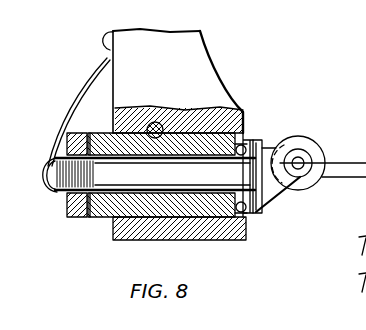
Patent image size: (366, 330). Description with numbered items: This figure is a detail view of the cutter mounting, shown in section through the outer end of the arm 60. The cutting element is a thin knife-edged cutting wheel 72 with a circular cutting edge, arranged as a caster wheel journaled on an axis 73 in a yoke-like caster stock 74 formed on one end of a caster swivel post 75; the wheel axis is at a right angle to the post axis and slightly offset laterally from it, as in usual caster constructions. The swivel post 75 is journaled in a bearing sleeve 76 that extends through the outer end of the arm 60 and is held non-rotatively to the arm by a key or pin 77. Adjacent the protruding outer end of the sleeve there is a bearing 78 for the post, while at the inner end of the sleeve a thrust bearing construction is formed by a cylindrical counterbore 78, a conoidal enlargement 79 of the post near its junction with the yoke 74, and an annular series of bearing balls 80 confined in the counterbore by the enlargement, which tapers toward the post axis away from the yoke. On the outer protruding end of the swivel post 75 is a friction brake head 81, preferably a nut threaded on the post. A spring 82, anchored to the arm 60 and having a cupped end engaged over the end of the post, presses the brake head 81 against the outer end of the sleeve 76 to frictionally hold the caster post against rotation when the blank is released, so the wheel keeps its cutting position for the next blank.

The arm 60 is at (193, 80).
The cutting wheel 72 is at (301, 138).
The axis 73 is at (300, 180).
The caster stock 74 is at (272, 185).
The caster swivel post 75 is at (99, 218).
The bearing sleeve 76 is at (103, 143).
The key or pin 77 is at (157, 125).
The bearing 78 is at (245, 140).
The conoidal enlargement 79 is at (267, 152).
The bearing balls 80 is at (248, 172).
The friction brake head 81 is at (68, 210).
The spring 82 is at (66, 124).